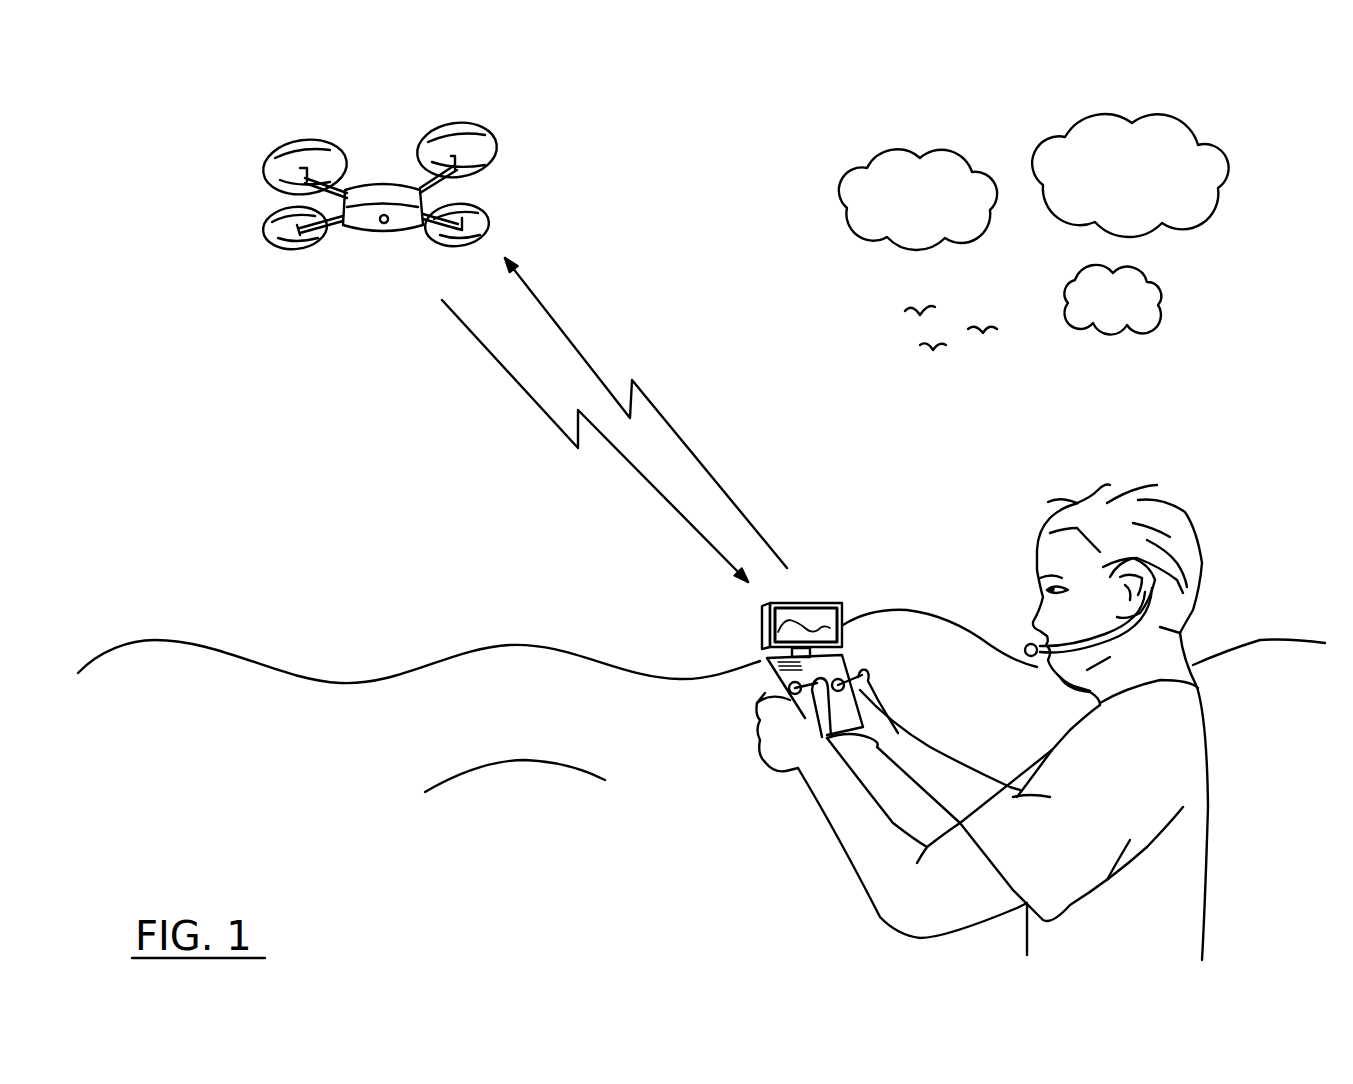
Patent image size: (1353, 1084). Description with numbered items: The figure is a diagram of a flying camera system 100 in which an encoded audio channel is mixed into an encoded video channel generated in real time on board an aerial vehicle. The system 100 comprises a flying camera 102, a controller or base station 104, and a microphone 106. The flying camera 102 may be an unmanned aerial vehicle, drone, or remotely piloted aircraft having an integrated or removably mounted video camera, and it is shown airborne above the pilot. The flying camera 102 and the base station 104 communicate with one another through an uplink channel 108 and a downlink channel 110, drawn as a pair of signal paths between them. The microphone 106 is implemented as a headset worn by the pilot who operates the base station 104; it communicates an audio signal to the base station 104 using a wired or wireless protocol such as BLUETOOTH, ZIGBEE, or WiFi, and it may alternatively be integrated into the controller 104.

The system 100 is at (173, 68).
The flying camera 102 is at (305, 142).
The controller 104 is at (812, 600).
The microphone 106 is at (1025, 648).
The uplink channel 108 is at (663, 417).
The downlink channel 110 is at (640, 478).